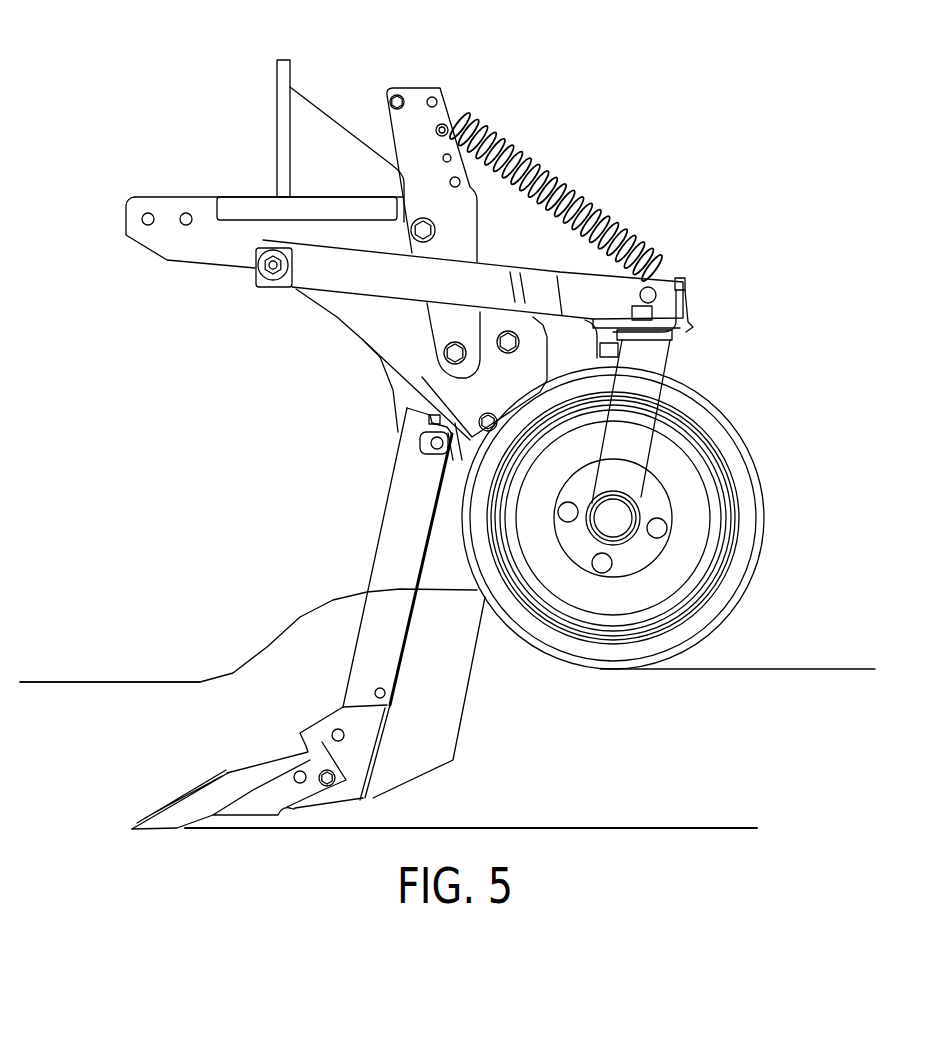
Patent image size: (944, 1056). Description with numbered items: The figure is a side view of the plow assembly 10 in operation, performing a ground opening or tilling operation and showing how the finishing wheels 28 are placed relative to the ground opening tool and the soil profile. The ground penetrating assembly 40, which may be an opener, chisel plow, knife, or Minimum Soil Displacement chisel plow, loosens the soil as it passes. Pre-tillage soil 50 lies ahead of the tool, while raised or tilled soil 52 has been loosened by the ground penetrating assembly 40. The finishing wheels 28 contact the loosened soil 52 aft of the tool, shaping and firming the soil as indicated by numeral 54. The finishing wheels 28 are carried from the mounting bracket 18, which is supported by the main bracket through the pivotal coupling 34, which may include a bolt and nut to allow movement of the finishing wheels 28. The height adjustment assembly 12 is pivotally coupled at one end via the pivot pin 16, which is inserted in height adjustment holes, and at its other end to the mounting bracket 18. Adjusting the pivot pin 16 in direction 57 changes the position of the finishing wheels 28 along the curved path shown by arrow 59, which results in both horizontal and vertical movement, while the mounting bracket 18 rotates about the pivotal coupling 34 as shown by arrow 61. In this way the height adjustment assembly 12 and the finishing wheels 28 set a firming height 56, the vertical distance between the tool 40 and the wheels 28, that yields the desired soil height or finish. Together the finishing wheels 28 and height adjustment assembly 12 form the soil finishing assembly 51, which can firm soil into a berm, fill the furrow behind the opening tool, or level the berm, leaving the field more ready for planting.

The plow assembly 10 is at (121, 146).
The height adjustment assembly 12 is at (540, 183).
The pivot pin 16 is at (444, 129).
The mounting bracket 18 is at (438, 290).
The finishing wheels 28 is at (701, 489).
The pivotal coupling 34 is at (270, 267).
The ground penetrating assembly 40 is at (160, 805).
The pre-tillage soil 50 is at (88, 668).
The soil finishing assembly 51 is at (714, 290).
The raised or tilled soil 52 is at (347, 600).
The shaped and firmed soil 54 is at (798, 672).
The firming height 56 is at (723, 673).
The adjustment direction 57 is at (462, 103).
The finishing wheel movement arrow 59 is at (729, 380).
The mounting bracket rotation arrow 61 is at (318, 335).